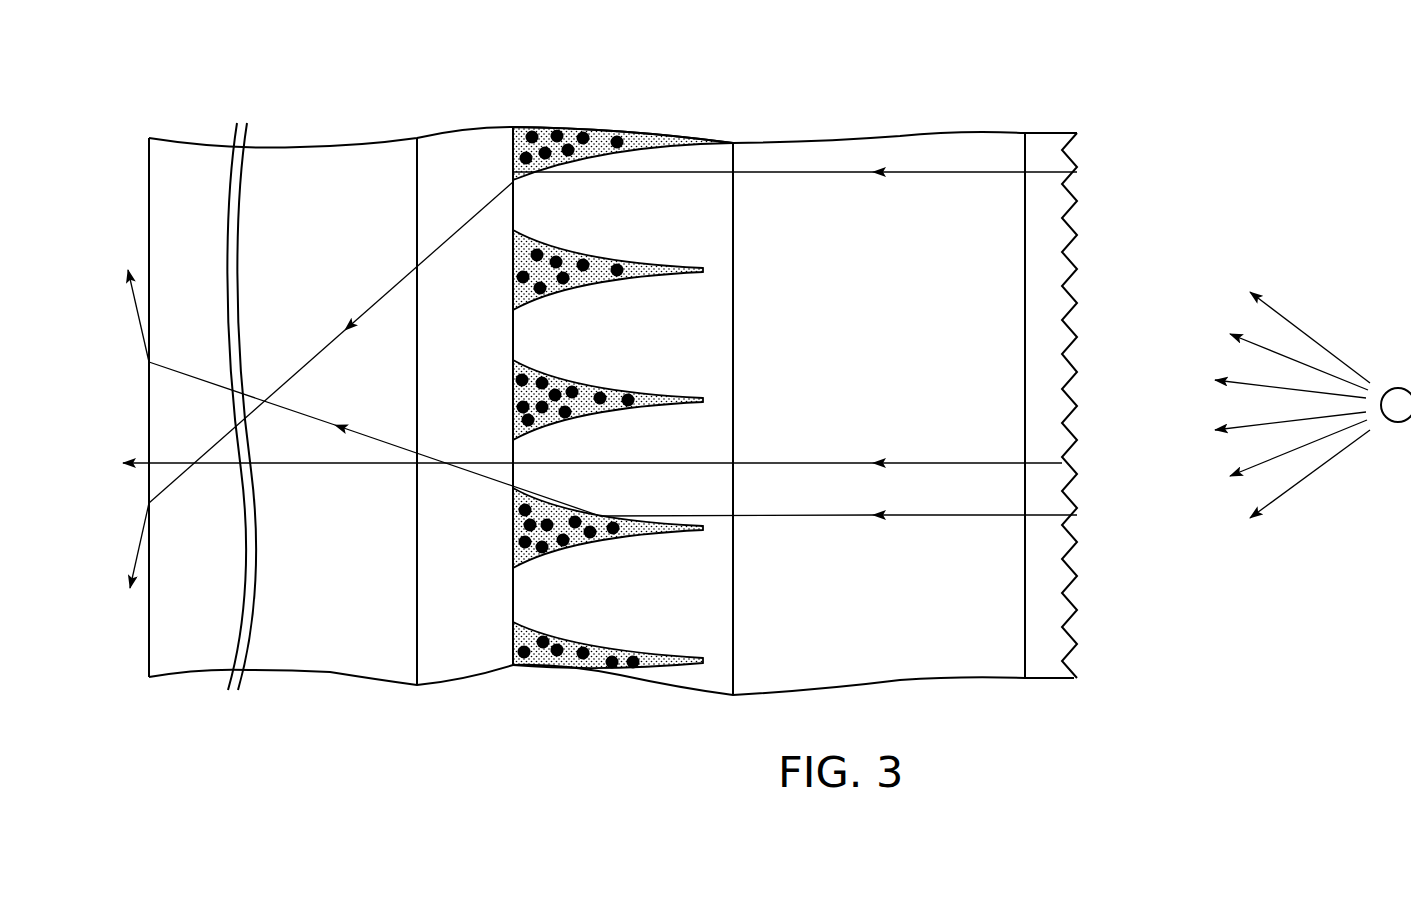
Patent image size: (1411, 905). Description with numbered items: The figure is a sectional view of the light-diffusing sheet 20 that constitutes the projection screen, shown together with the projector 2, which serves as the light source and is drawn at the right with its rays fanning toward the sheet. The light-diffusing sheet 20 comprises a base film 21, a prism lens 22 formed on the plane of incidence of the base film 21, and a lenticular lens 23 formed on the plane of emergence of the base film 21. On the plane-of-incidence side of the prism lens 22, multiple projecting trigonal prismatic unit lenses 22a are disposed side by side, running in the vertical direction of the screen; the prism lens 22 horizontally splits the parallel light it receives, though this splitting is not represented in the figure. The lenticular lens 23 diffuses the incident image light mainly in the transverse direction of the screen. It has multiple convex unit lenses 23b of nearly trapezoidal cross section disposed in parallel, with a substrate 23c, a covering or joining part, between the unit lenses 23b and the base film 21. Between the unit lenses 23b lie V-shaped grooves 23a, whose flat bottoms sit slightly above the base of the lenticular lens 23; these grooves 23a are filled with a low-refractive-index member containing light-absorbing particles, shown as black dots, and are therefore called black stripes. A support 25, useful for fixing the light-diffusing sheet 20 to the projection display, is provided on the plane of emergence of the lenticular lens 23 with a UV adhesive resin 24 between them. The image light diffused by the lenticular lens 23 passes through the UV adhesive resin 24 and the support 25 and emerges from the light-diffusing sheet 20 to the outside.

The light-diffusing sheet 20 is at (848, 90).
The base film 21 is at (925, 150).
The prism lens 22 is at (1117, 395).
The unit lenses 22a is at (1062, 242).
The lenticular lens 23 is at (668, 374).
The V-shaped grooves 23a is at (548, 130).
The unit lenses 23b is at (630, 183).
The substrate 23c is at (735, 137).
The UV adhesive resin 24 is at (453, 142).
The support 25 is at (332, 152).
The projector 2 is at (1399, 378).